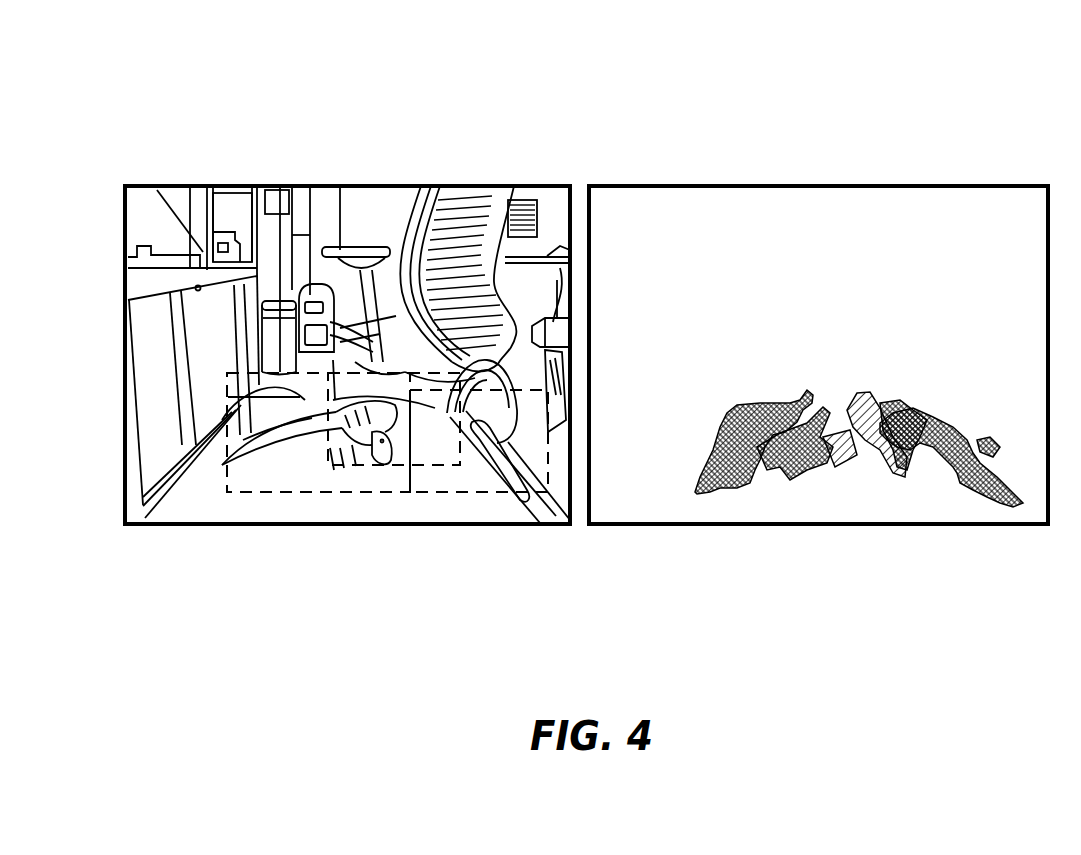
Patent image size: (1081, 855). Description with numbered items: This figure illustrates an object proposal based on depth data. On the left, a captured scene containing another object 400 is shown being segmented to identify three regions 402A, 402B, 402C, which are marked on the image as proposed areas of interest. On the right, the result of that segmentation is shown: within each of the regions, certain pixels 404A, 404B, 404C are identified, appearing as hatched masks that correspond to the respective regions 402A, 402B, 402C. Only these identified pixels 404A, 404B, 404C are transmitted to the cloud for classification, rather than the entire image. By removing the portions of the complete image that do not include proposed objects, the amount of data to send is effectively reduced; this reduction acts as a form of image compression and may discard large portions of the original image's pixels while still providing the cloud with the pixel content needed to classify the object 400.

The object 400 is at (384, 262).
The first region 402A is at (290, 300).
The second region 402B is at (305, 282).
The third region 402C is at (453, 497).
The pixels of first region 404A is at (753, 403).
The pixels of second region 404B is at (867, 400).
The pixels of third region 404C is at (950, 420).